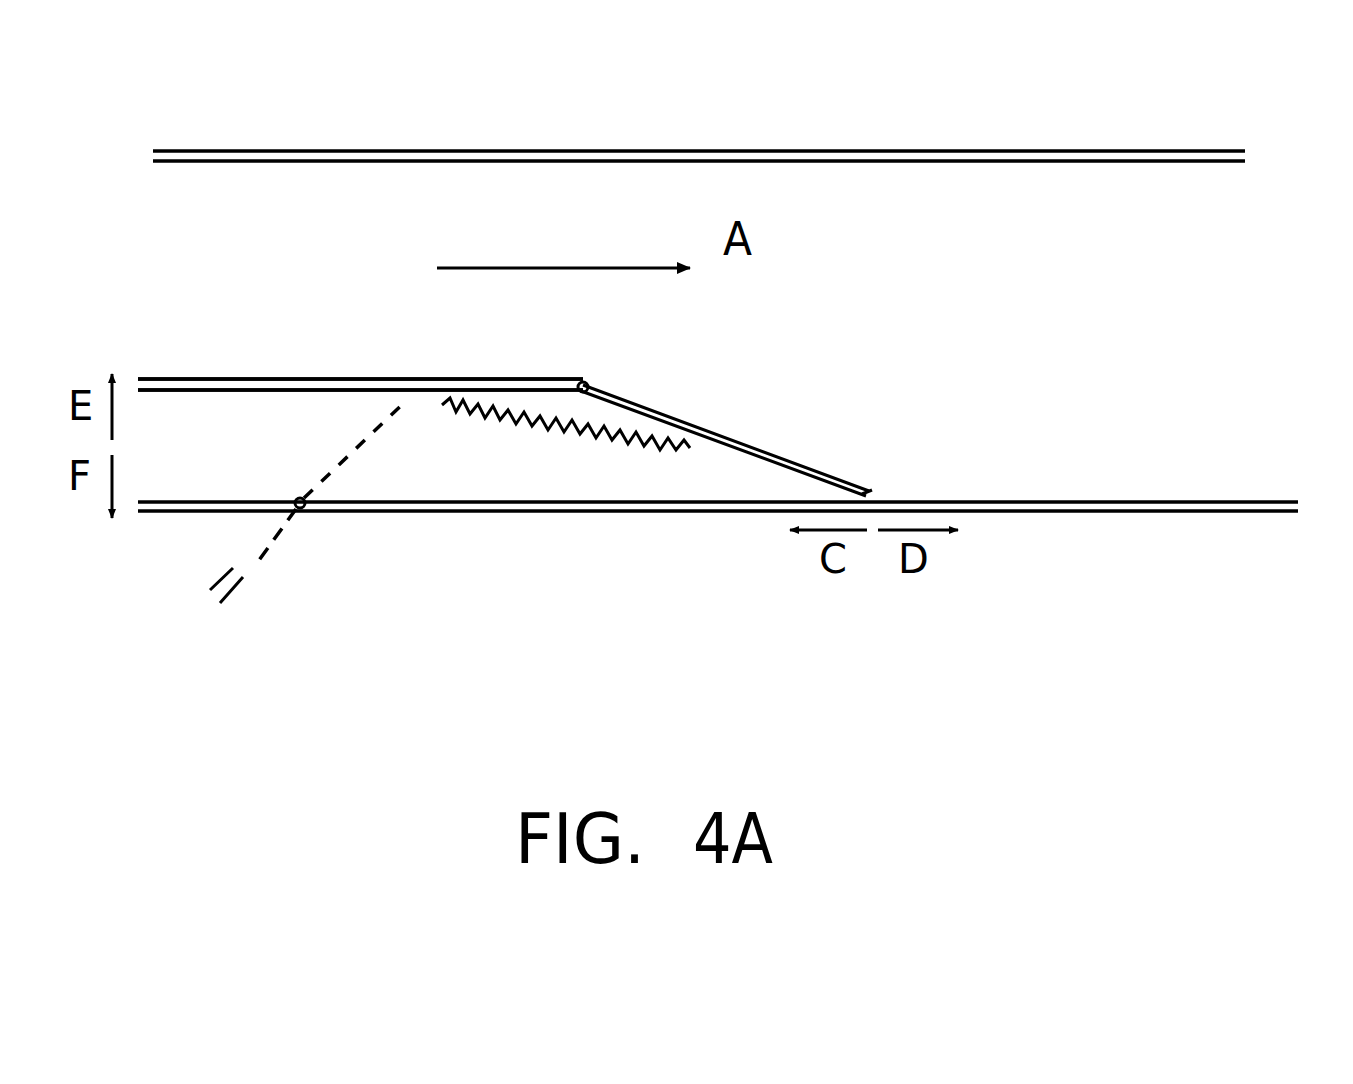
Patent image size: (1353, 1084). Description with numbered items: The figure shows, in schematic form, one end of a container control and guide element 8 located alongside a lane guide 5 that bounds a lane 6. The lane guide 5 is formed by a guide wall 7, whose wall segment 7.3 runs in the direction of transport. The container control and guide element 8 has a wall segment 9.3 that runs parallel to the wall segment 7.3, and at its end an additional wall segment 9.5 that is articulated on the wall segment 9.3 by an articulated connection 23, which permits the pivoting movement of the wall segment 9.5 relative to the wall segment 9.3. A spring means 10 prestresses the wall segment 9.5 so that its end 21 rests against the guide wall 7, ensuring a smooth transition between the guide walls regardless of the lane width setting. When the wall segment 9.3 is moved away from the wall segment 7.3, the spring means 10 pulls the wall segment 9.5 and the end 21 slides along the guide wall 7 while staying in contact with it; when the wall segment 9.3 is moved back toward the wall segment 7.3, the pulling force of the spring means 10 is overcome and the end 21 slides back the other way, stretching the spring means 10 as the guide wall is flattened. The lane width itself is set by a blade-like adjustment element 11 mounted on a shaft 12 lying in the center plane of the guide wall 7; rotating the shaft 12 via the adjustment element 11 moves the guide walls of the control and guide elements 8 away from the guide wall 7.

The lane guide 5 is at (915, 163).
The lane 6 is at (1179, 348).
The guide wall 7 is at (968, 485).
The wall segment 7.3 is at (647, 508).
The container control and guide element 8 is at (262, 353).
The wall segment 9.3 is at (163, 383).
The wall segment 9.5 is at (750, 440).
The spring means 10 is at (555, 430).
The adjustment element 11 is at (353, 463).
The shaft 12 is at (305, 517).
The end 21 is at (880, 482).
The articulated connection 23 is at (590, 383).